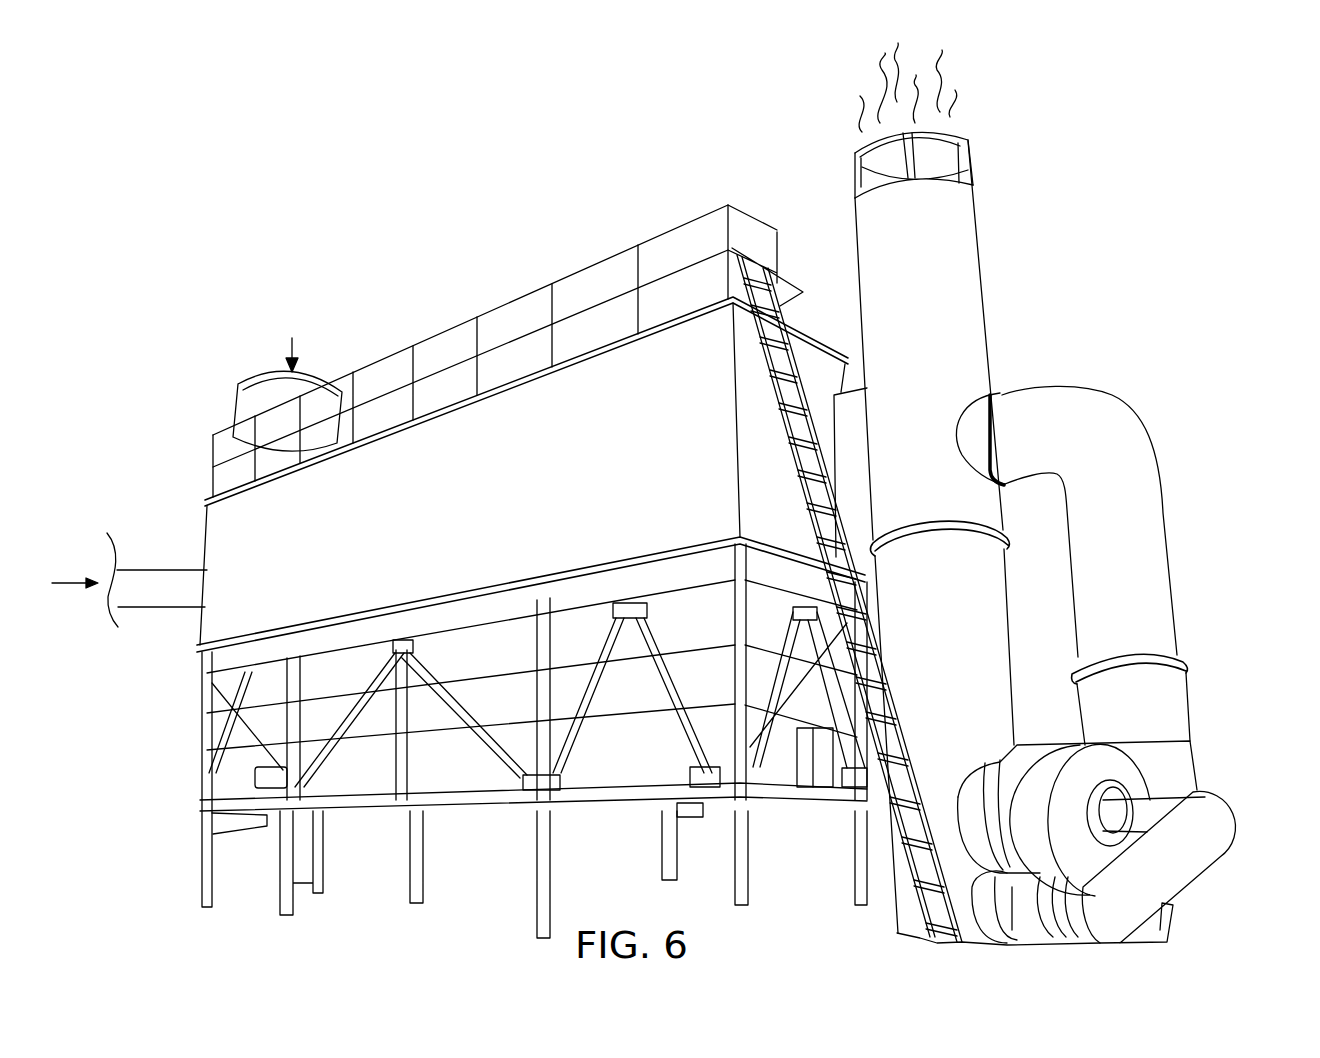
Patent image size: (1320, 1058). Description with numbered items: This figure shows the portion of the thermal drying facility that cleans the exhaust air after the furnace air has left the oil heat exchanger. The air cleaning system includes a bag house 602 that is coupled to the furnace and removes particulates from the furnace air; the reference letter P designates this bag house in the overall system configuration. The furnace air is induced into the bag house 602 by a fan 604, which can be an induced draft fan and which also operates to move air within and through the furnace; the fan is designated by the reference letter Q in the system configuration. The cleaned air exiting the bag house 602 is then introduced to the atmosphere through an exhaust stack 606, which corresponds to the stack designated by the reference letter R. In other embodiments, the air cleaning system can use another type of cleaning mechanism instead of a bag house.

The bag house 602 is at (595, 262).
The fan 604 is at (1223, 793).
The exhaust stack 606 is at (977, 230).
The bag house P is at (483, 262).
The fan Q is at (1108, 792).
The stack R is at (937, 298).